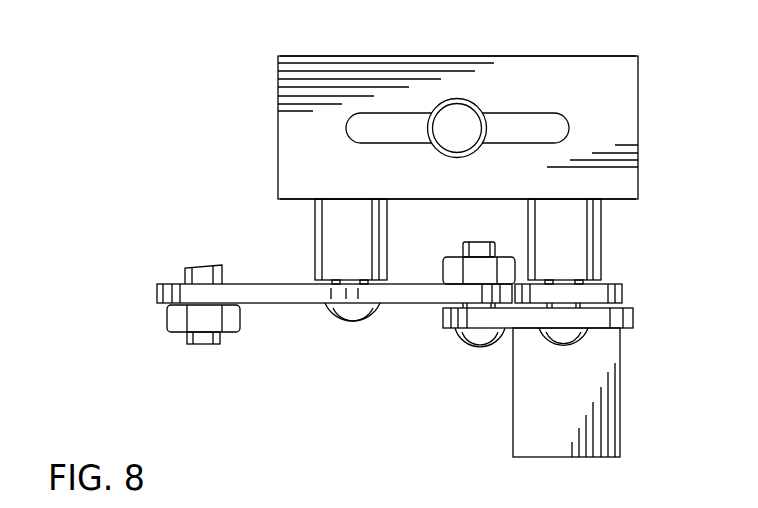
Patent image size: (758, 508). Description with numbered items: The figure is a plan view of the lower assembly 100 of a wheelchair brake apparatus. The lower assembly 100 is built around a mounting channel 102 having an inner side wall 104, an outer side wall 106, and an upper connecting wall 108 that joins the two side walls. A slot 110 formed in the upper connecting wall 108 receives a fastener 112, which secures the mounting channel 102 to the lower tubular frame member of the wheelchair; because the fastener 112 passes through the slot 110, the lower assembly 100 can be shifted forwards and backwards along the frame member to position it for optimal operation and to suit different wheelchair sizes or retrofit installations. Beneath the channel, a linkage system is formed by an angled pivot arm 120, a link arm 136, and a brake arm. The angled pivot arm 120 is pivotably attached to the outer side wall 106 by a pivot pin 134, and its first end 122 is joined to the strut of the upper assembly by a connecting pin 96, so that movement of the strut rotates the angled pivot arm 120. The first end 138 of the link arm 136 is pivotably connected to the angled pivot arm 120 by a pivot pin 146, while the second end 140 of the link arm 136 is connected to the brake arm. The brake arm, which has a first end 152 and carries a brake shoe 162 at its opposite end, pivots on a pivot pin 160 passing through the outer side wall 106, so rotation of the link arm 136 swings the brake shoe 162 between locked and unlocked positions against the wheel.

The lower assembly 100 is at (54, 170).
The mounting channel 102 is at (468, 117).
The inner side wall 104 is at (455, 56).
The outer side wall 106 is at (293, 199).
The upper connecting wall 108 is at (529, 67).
The slot 110 is at (569, 128).
The fastener 112 is at (444, 109).
The angled pivot arm 120 is at (279, 305).
The first end 122 is at (157, 289).
The pivot pin 134 is at (353, 324).
The link arm 136 is at (513, 322).
The first end 138 is at (443, 318).
The second end 140 is at (633, 322).
The pivot pin 146 is at (477, 345).
The first end 152 is at (583, 294).
The pivot pin 160 is at (567, 347).
The brake shoe 162 is at (605, 440).
The connecting pin 96 is at (208, 347).